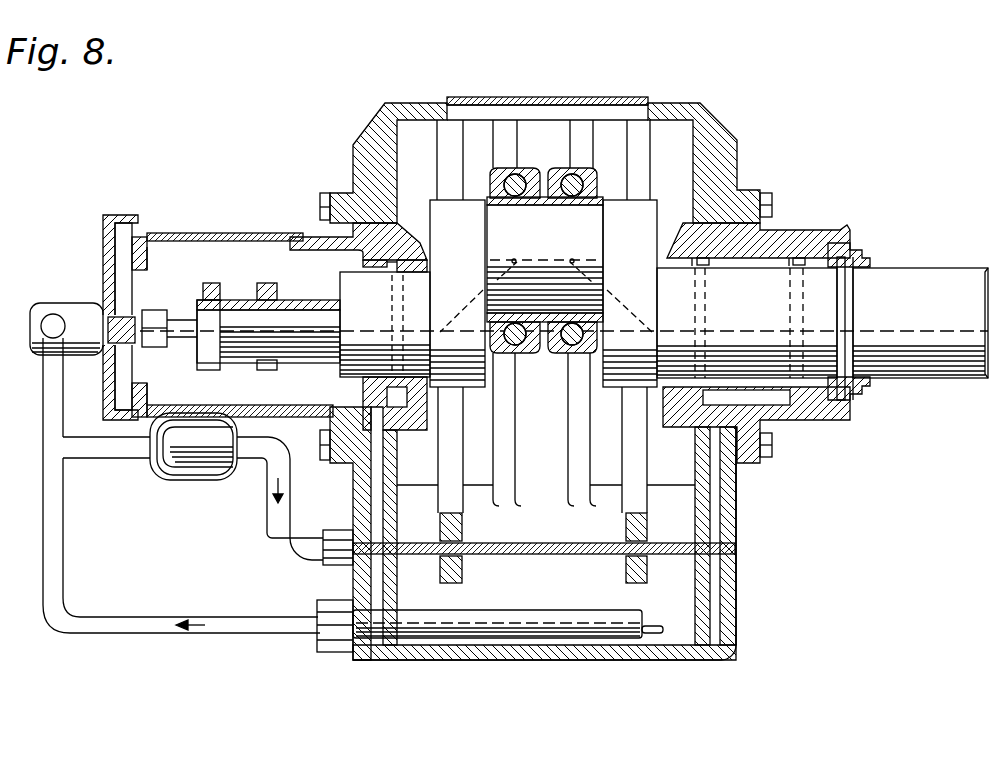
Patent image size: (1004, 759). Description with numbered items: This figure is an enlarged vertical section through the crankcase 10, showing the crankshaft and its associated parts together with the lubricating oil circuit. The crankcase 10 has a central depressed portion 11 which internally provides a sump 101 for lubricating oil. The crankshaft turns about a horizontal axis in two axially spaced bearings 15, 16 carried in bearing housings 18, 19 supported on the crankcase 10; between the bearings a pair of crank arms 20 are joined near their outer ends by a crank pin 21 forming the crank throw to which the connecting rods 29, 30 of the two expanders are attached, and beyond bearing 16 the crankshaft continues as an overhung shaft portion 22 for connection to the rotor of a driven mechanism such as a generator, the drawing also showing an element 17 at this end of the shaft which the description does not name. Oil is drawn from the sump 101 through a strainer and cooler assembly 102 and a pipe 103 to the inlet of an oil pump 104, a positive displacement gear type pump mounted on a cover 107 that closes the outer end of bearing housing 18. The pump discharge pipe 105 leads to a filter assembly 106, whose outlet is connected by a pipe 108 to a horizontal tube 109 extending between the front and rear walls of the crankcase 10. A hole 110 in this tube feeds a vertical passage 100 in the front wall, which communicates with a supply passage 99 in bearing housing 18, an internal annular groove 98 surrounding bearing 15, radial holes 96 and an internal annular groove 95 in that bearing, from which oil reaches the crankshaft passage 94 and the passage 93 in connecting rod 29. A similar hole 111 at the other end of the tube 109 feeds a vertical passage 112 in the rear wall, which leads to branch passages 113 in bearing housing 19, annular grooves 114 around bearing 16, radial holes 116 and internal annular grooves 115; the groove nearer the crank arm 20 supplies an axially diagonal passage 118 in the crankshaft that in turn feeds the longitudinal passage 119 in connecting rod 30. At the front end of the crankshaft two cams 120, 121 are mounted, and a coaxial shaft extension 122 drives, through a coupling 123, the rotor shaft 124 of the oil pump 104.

The crankcase 10 is at (715, 128).
The central depressed portion 11 is at (730, 626).
The bearing 15 is at (378, 268).
The bearing 16 is at (718, 385).
The seal 17 is at (912, 375).
The bearing housing 18 is at (322, 236).
The bearing housing 19 is at (814, 232).
The crank arm 20 is at (430, 207).
The crank pin 21 is at (545, 259).
The overhung shaft portion 22 is at (960, 268).
The connecting rod 29 is at (520, 168).
The connecting rod 30 is at (590, 170).
The passage 93 is at (513, 259).
The passage 94 is at (462, 316).
The internal annular groove 95 is at (398, 270).
The radial holes 96 is at (392, 270).
The internal annular groove 98 is at (366, 262).
The supply passage 99 is at (368, 405).
The vertical passage 100 is at (383, 470).
The sump 101 is at (571, 581).
The strainer and cooler assembly 102 is at (514, 610).
The pipe 103 is at (138, 628).
The oil pump 104 is at (62, 306).
The discharge pipe 105 is at (105, 452).
The filter assembly 106 is at (196, 476).
The cover 107 is at (110, 215).
The pipe 108 is at (268, 530).
The tube 109 is at (540, 543).
The hole 110 is at (386, 545).
The hole 111 is at (700, 535).
The vertical passage 112 is at (718, 502).
The branch passages 113 is at (690, 415).
The annular grooves 114 is at (663, 395).
The internal annular groove 115 is at (702, 270).
The radial holes 116 is at (693, 268).
The axially diagonal passage 118 is at (628, 296).
The longitudinal passage 119 is at (572, 259).
The cam 120 is at (222, 278).
The cam 121 is at (266, 286).
The coaxial shaft extension 122 is at (186, 337).
The coupling 123 is at (172, 303).
The rotor shaft 124 is at (127, 343).